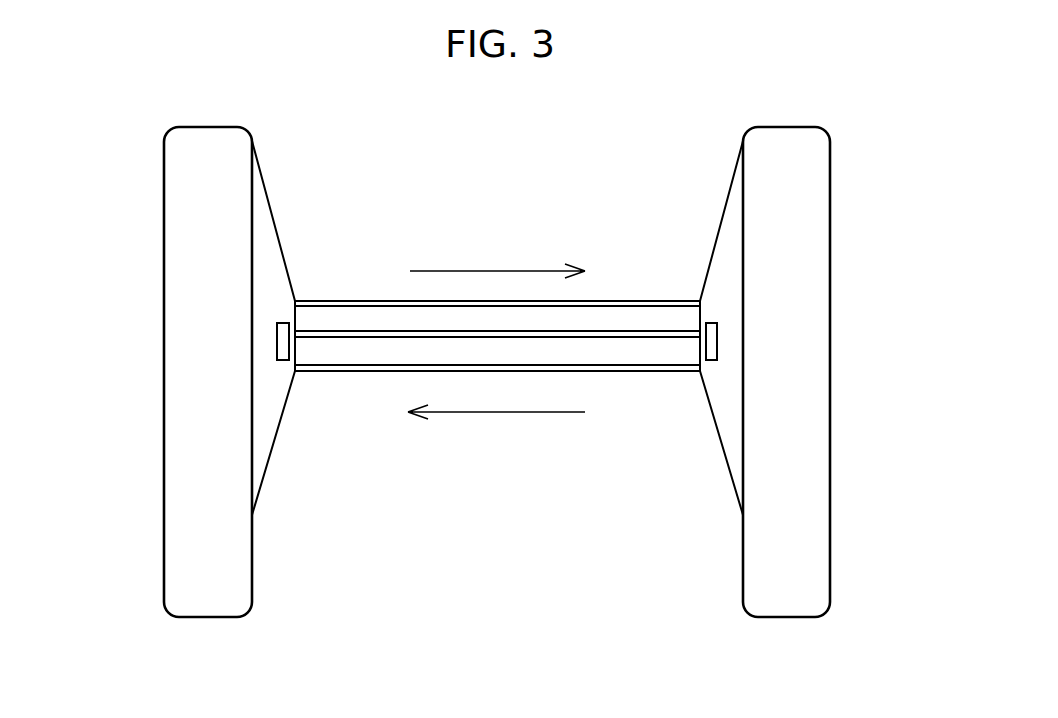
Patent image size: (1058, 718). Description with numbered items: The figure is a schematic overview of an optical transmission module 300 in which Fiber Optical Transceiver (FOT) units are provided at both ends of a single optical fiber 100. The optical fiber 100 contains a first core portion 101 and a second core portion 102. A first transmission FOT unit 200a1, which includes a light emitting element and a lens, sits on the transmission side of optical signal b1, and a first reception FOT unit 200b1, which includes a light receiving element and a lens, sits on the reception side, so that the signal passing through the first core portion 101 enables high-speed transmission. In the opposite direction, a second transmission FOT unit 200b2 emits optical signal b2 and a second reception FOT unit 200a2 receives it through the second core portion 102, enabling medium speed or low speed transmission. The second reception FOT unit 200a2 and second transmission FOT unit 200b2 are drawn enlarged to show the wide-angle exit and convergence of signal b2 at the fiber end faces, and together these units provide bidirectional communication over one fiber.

The optical transmission module 300 is at (517, 159).
The optical fiber 100 is at (497, 320).
The first core portion 101 is at (644, 335).
The second core portion 102 is at (660, 320).
The first transmission FOT unit 200a1 is at (283, 341).
The first reception FOT unit 200b1 is at (712, 341).
The second reception FOT unit 200a2 is at (240, 571).
The second transmission FOT unit 200b2 is at (757, 571).